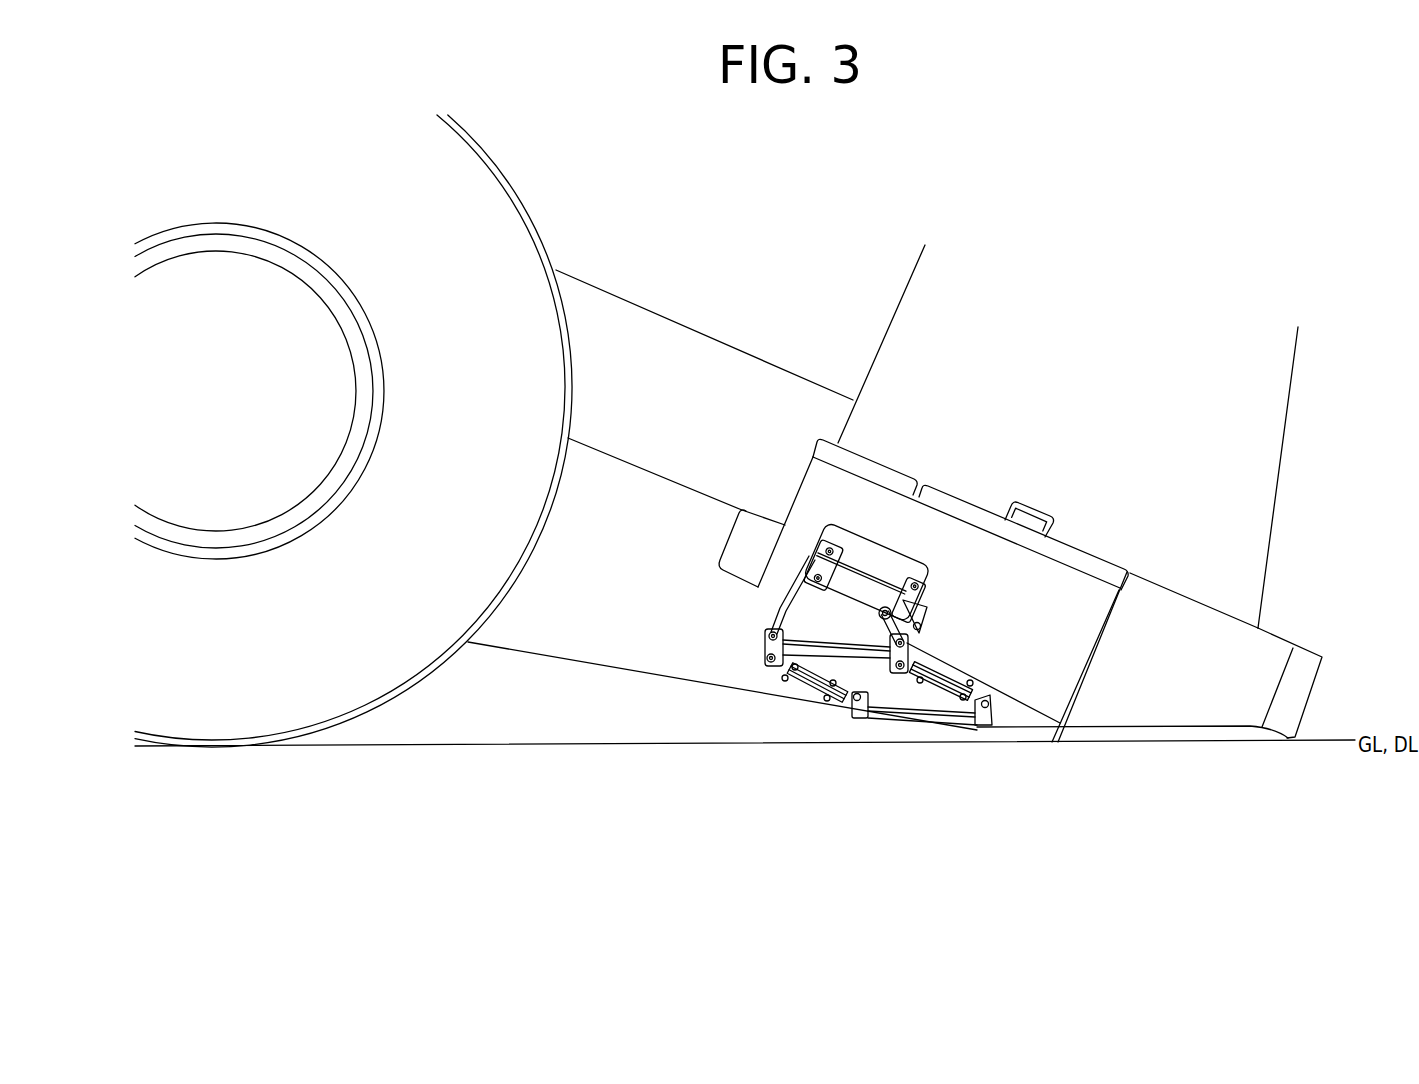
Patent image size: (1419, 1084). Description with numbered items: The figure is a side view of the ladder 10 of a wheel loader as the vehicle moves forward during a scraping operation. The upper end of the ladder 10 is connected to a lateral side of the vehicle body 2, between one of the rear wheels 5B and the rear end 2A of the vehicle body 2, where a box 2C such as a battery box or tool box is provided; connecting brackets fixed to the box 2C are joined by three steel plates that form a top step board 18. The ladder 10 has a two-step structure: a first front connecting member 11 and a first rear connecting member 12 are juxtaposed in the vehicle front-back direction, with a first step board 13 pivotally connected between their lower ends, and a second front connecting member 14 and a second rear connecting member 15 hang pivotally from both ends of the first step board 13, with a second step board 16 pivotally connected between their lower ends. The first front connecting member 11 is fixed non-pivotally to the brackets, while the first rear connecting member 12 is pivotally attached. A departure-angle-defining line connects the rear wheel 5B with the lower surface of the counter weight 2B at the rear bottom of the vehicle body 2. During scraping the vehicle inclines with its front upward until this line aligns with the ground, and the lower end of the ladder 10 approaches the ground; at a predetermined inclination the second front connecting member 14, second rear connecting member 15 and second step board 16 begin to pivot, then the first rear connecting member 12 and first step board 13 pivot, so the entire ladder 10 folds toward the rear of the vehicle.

The vehicle body 2 is at (702, 475).
The rear end of the vehicle body 2A is at (1183, 742).
The counter weight 2B is at (1312, 690).
The box 2C is at (1065, 583).
The rear wheel 5B is at (380, 678).
The ladder 10 is at (962, 608).
The first front connecting member 11 is at (778, 614).
The first rear connecting member 12 is at (880, 614).
The first step board 13 is at (853, 658).
The second front connecting member 14 is at (805, 685).
The second rear connecting member 15 is at (945, 677).
The second step board 16 is at (880, 717).
The top step board 18 is at (868, 573).